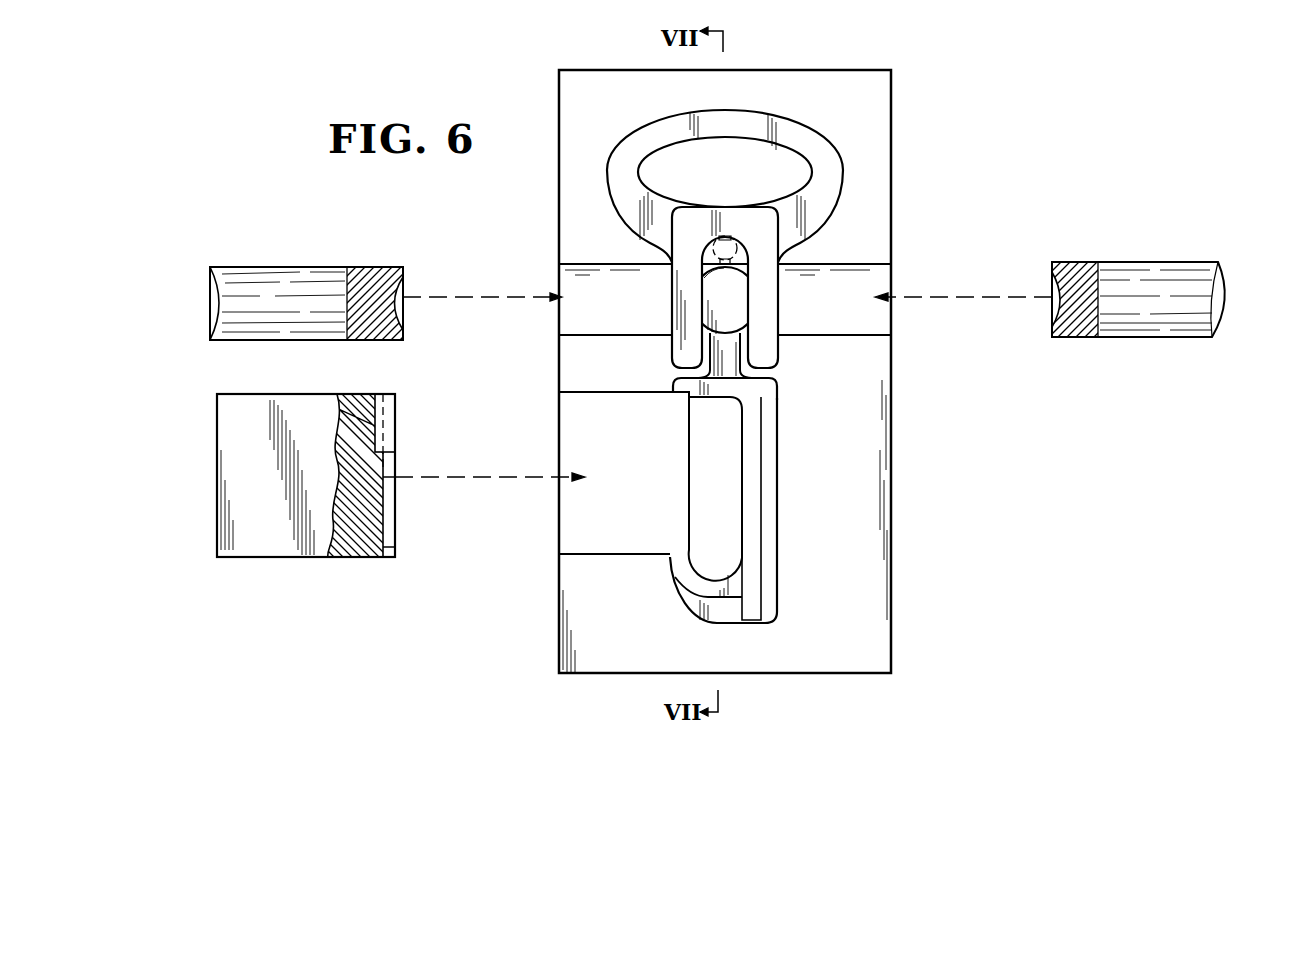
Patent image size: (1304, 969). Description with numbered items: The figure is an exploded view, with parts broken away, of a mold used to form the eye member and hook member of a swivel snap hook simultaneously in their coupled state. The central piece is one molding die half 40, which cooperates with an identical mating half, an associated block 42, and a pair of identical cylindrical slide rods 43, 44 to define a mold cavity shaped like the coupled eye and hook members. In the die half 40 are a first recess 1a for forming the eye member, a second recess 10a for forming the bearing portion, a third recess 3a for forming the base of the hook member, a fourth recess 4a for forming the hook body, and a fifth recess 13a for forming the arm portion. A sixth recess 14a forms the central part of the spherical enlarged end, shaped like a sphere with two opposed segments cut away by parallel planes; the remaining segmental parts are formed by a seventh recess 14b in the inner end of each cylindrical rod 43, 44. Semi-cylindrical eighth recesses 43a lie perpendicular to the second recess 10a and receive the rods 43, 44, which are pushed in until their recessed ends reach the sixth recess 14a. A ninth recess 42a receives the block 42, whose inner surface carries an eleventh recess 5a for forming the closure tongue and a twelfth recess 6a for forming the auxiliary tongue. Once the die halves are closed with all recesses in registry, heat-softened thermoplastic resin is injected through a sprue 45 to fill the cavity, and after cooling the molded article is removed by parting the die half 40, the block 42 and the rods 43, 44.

The molding die half 40 is at (897, 108).
The first recess 1a is at (613, 163).
The sprue 45 is at (727, 237).
The sixth recess 14a is at (713, 296).
The fifth recess 13a is at (730, 342).
The second recess 10a is at (683, 350).
The third recess 3a is at (697, 389).
The fourth recess 4a is at (780, 548).
The ninth recess 42a is at (578, 553).
The eighth recess 43a is at (572, 333).
The cylindrical rod 43 is at (297, 273).
The cylindrical rod 44 is at (1123, 270).
The seventh recess 14b is at (403, 297).
The block 42 is at (275, 546).
The eleventh recess 5a is at (383, 412).
The twelfth recess 6a is at (390, 440).